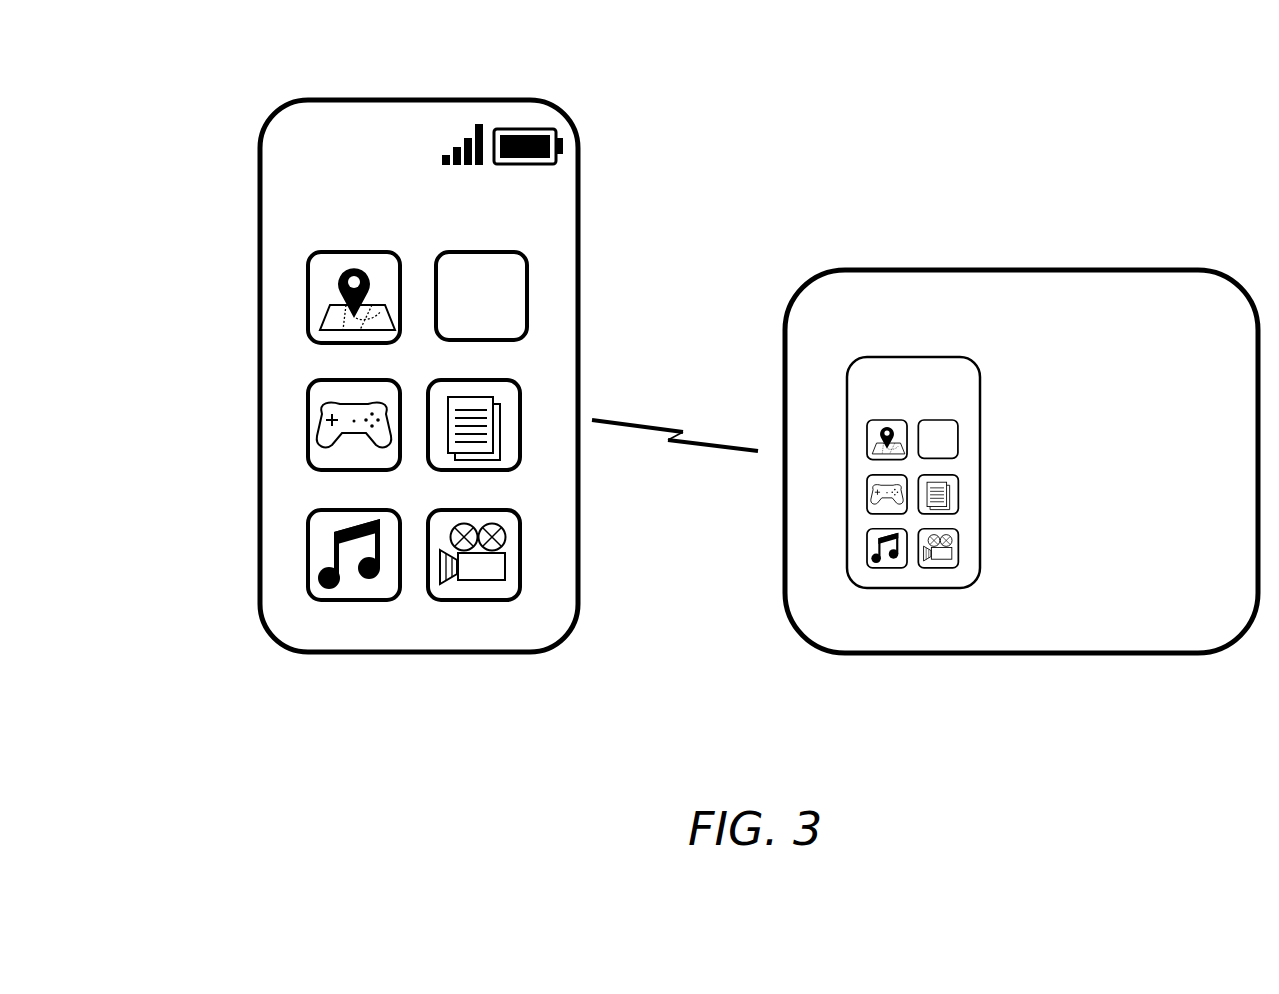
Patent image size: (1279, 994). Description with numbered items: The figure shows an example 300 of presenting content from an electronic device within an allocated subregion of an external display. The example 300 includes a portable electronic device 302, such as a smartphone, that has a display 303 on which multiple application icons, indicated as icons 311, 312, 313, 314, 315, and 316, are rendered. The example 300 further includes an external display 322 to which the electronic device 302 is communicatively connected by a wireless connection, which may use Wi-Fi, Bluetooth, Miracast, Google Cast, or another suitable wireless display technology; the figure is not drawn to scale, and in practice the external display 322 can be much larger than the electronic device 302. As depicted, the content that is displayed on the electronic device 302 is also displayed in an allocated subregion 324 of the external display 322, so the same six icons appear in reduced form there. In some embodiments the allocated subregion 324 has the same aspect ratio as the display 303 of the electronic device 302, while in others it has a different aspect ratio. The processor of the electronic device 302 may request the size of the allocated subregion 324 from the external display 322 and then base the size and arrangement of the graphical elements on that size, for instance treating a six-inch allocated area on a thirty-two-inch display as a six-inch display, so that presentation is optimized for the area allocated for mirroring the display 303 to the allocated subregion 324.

The example 300 is at (256, 57).
The portable electronic device 302 is at (480, 98).
The display 303 is at (280, 196).
The icon 311 is at (310, 292).
The icon 312 is at (458, 250).
The icon 313 is at (310, 424).
The icon 314 is at (512, 386).
The icon 315 is at (329, 583).
The icon 316 is at (466, 586).
The external display 322 is at (950, 268).
The allocated subregion 324 is at (902, 355).